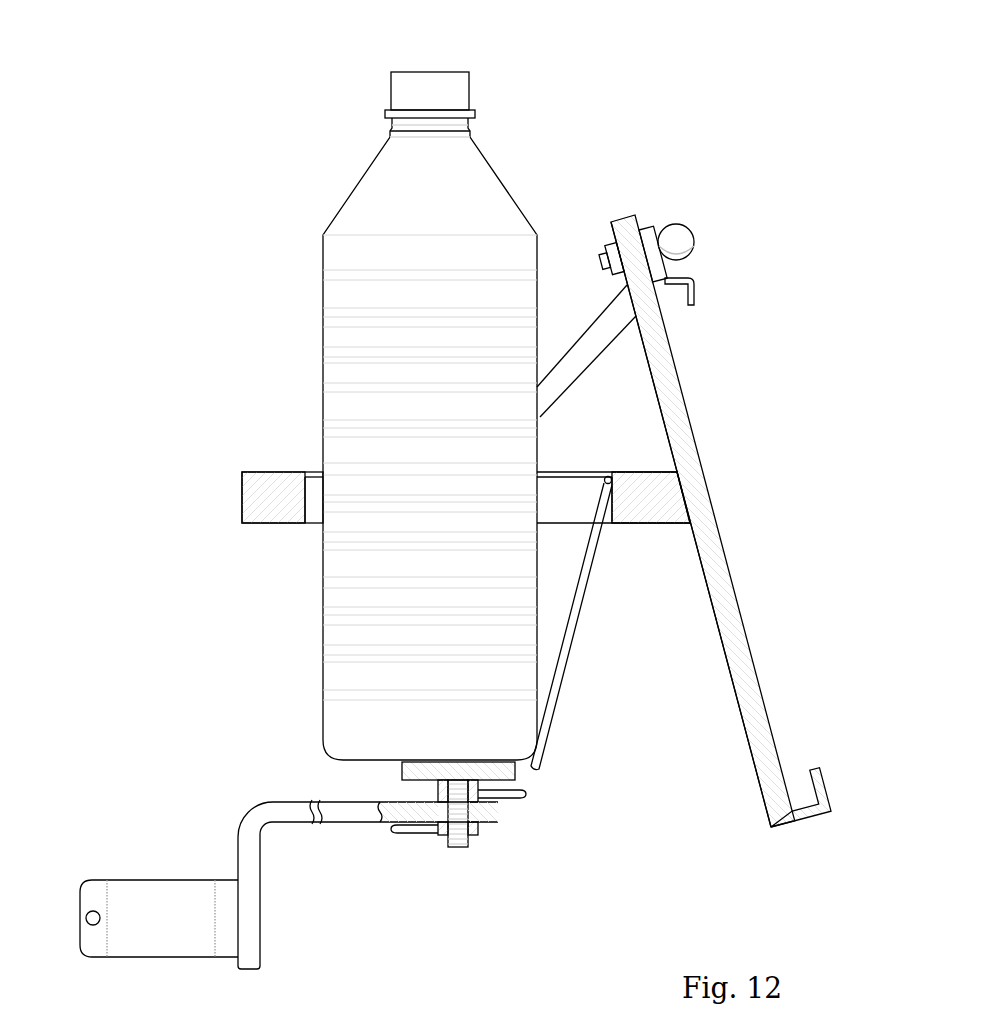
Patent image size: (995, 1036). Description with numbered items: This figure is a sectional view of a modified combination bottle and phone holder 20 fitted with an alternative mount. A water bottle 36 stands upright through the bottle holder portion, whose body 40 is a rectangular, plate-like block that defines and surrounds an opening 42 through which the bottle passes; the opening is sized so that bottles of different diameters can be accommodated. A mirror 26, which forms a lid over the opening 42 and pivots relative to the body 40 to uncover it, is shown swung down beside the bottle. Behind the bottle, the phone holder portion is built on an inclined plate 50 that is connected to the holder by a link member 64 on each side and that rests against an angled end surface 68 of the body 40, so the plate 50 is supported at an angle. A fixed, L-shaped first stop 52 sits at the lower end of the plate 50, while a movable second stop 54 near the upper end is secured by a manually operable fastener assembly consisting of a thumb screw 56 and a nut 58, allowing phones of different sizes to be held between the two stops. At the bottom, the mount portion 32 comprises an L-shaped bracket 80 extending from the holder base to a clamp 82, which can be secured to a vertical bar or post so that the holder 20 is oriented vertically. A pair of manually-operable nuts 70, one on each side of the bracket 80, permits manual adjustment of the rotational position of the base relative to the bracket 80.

The combination bottle and phone holder 20 is at (577, 92).
The water bottle 36 is at (467, 178).
The body 40 is at (244, 482).
The opening 42 is at (604, 476).
The mirror 26 is at (573, 637).
The plate 50 is at (680, 410).
The end surface 68 is at (697, 548).
The first stop 52 is at (830, 770).
The nut 58 is at (604, 243).
The thumb screw 56 is at (672, 230).
The second stop 54 is at (700, 283).
The link member 64 is at (593, 348).
The manually-operable nut 70 is at (545, 795).
The bracket 80 is at (250, 808).
The clamp 82 is at (126, 880).
The mount portion 32 is at (345, 893).